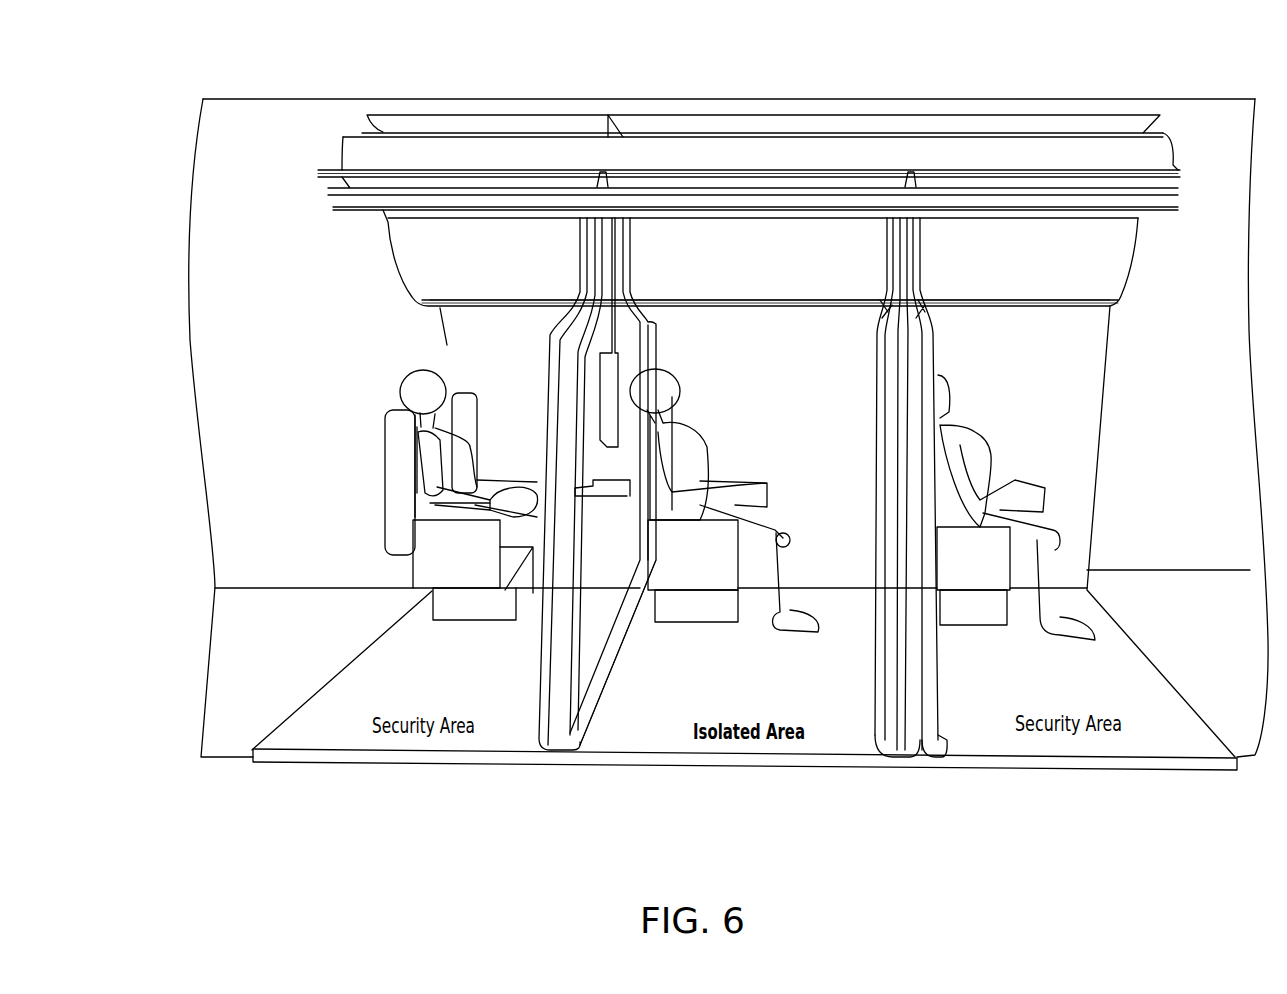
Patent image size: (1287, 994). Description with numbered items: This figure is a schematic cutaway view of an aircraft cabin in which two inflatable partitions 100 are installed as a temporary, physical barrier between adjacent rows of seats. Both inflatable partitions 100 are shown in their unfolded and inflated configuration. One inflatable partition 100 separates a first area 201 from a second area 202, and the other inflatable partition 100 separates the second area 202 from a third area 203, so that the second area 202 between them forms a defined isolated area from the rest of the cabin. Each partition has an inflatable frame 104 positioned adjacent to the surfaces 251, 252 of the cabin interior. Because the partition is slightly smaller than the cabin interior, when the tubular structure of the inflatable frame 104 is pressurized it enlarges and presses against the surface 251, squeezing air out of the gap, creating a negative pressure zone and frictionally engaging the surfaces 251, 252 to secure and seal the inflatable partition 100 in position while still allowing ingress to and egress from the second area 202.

The inflatable partition 100 is at (540, 760).
The inflatable frame 104 is at (597, 172).
The first area 201 is at (278, 366).
The second area 202 is at (613, 722).
The third area 203 is at (1048, 348).
The surface of the aircraft cabin interior 251 is at (715, 335).
The surface of the aircraft cabin interior 252 is at (783, 258).